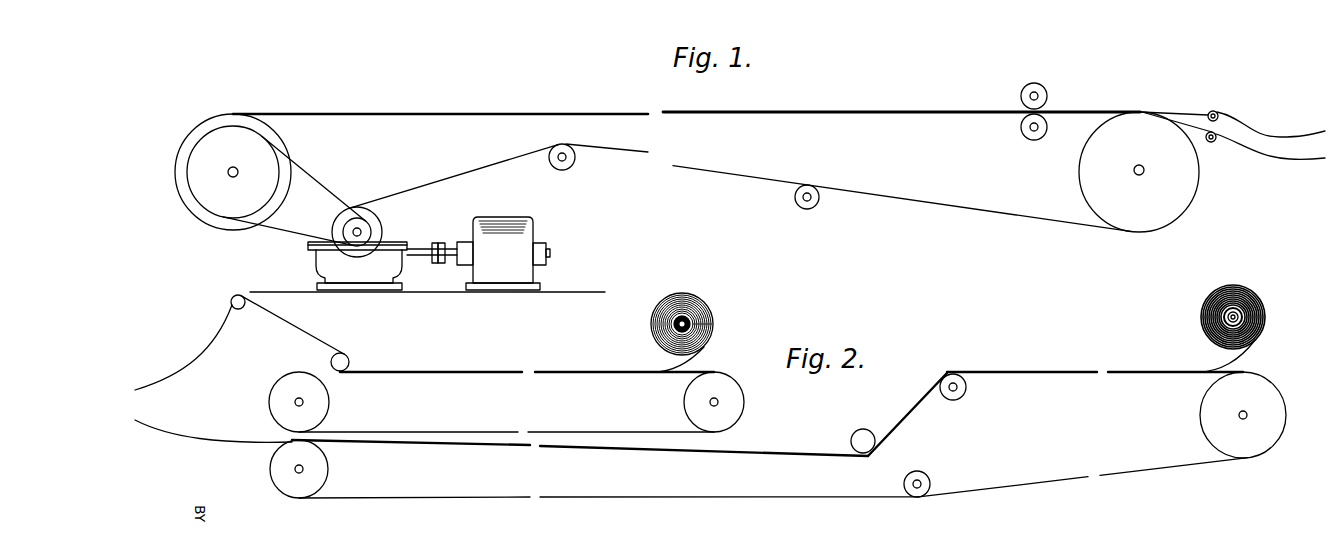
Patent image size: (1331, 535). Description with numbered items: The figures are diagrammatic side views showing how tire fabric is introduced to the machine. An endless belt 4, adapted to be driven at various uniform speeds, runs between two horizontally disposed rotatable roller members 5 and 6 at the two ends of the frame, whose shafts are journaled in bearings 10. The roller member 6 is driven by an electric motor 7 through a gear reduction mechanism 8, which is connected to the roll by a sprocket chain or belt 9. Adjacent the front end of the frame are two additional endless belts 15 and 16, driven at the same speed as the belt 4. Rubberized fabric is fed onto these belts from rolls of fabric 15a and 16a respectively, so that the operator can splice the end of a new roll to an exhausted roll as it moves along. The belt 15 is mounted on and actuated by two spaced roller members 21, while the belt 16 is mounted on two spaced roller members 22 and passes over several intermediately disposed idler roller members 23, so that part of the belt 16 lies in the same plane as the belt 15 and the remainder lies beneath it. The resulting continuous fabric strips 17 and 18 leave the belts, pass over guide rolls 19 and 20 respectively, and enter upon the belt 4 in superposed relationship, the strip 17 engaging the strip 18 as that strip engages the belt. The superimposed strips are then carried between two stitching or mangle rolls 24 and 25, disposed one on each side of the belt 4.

In FIG. 1, the endless belt 4 is at (938, 204).
In FIG. 1, the roller member 5 is at (1192, 205).
In FIG. 1, the roller member 6 is at (192, 216).
In FIG. 1, the electric motor 7 is at (534, 227).
In FIG. 1, the gear reduction mechanism 8 is at (307, 262).
In FIG. 1, the sprocket chain or belt 9 is at (322, 184).
In FIG. 1, the bearings 10 is at (1139, 176).
In FIG. 2, the endless belt 15 is at (589, 371).
In FIG. 2, the roll of fabric 15a is at (713, 324).
In FIG. 2, the endless belt 16 is at (483, 499).
In FIG. 2, the roll of fabric 16a is at (1266, 317).
In FIG. 1, the fabric strip 17 is at (1263, 134).
In FIG. 2, the fabric strip 17 is at (194, 362).
In FIG. 1, the fabric strip 18 is at (1274, 161).
In FIG. 2, the fabric strip 18 is at (222, 441).
In FIG. 1, the roll 19 is at (1215, 111).
In FIG. 1, the roll 20 is at (1212, 143).
In FIG. 2, the roller members 21 is at (330, 405).
In FIG. 2, the roller members 22 is at (329, 471).
In FIG. 2, the idler roller members 23 is at (863, 429).
In FIG. 1, the stitching or mangle roll 24 is at (1034, 83).
In FIG. 1, the stitching or mangle roll 25 is at (1034, 141).